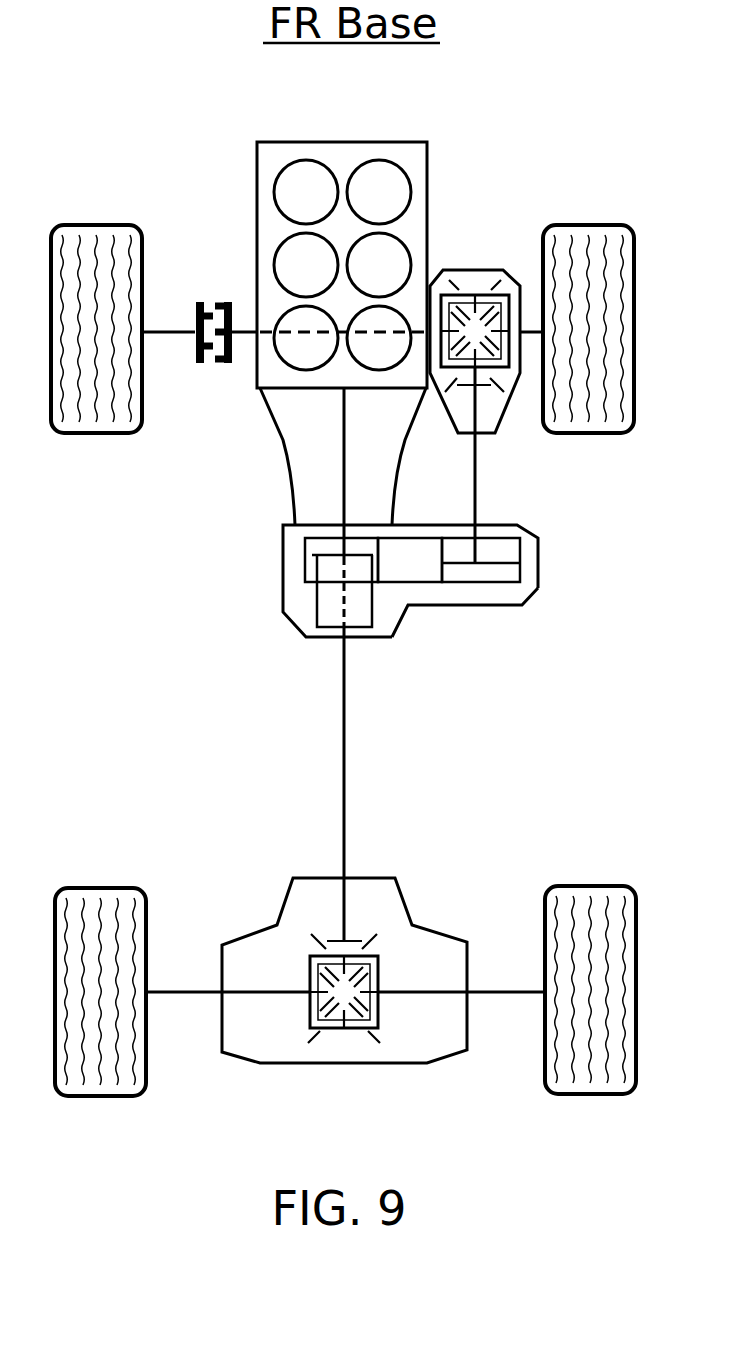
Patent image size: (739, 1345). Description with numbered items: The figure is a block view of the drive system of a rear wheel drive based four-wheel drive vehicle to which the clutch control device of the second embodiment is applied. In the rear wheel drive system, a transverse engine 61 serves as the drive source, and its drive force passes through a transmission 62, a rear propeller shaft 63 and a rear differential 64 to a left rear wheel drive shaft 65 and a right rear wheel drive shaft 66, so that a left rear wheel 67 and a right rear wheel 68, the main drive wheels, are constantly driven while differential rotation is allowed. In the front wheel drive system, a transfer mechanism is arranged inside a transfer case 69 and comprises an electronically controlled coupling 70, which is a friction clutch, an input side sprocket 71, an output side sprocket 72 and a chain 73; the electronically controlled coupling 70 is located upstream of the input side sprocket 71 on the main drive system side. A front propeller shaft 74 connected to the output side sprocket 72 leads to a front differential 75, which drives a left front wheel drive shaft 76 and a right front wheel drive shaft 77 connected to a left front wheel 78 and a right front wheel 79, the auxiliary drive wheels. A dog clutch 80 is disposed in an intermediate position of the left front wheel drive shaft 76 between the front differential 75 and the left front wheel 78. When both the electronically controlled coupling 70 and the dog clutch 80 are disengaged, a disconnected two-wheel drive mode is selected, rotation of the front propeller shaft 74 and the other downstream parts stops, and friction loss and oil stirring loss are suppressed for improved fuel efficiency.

The transverse engine 61 is at (355, 142).
The transmission 62 is at (283, 478).
The rear propeller shaft 63 is at (345, 785).
The rear differential 64 is at (359, 1029).
The left rear wheel drive shaft 65 is at (183, 991).
The right rear wheel drive shaft 66 is at (500, 991).
The left rear wheel 67 is at (93, 888).
The right rear wheel 68 is at (592, 886).
The transfer case 69 is at (468, 607).
The electronically controlled coupling 70 is at (307, 604).
The input side sprocket 71 is at (380, 555).
The output side sprocket 72 is at (436, 565).
The chain 73 is at (483, 583).
The front propeller shaft 74 is at (475, 468).
The front differential 75 is at (468, 292).
The left front wheel drive shaft 76 is at (250, 331).
The right front wheel drive shaft 77 is at (531, 330).
The left front wheel 78 is at (110, 226).
The right front wheel 79 is at (595, 225).
The dog clutch 80 is at (208, 294).